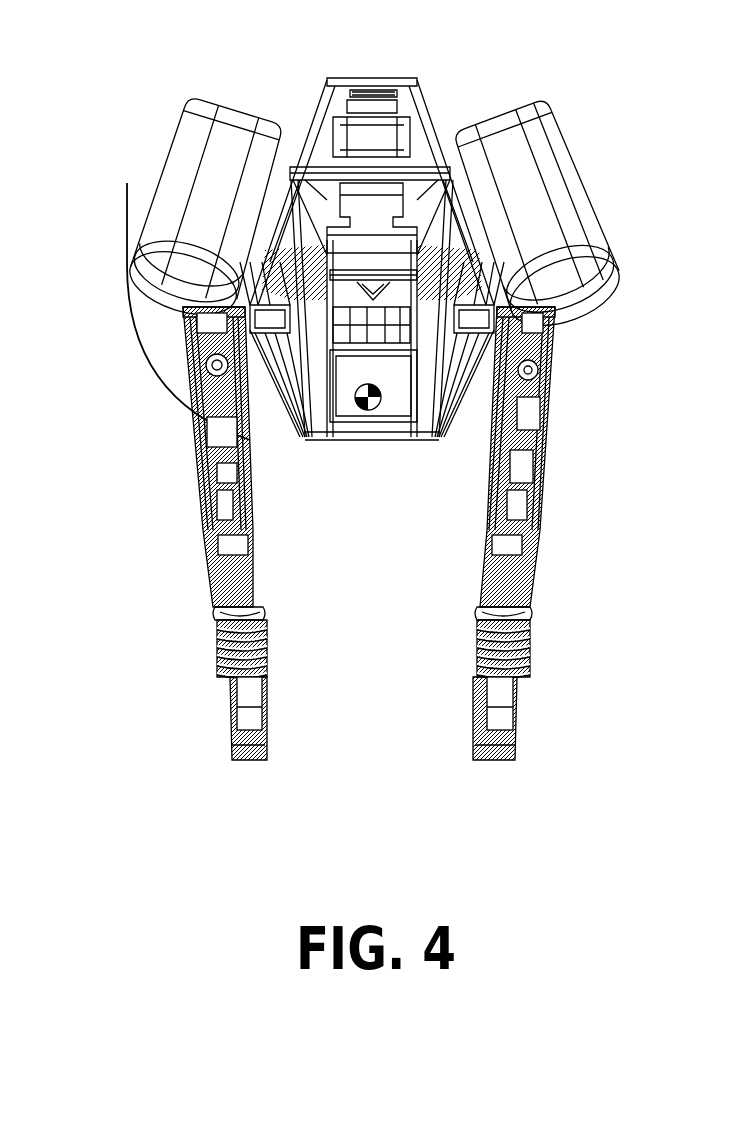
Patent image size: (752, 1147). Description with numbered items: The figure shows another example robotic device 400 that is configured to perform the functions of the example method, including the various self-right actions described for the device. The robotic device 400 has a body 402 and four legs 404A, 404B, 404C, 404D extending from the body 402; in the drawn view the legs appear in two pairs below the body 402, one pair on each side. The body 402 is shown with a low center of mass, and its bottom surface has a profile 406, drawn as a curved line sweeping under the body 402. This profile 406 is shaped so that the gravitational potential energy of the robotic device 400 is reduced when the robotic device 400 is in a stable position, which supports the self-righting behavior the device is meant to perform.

The robotic device 400 is at (530, 53).
The body 402 is at (352, 78).
The leg 404A is at (222, 700).
The leg 404B is at (265, 697).
The leg 404C is at (478, 700).
The leg 404D is at (512, 708).
The profile 406 is at (125, 222).